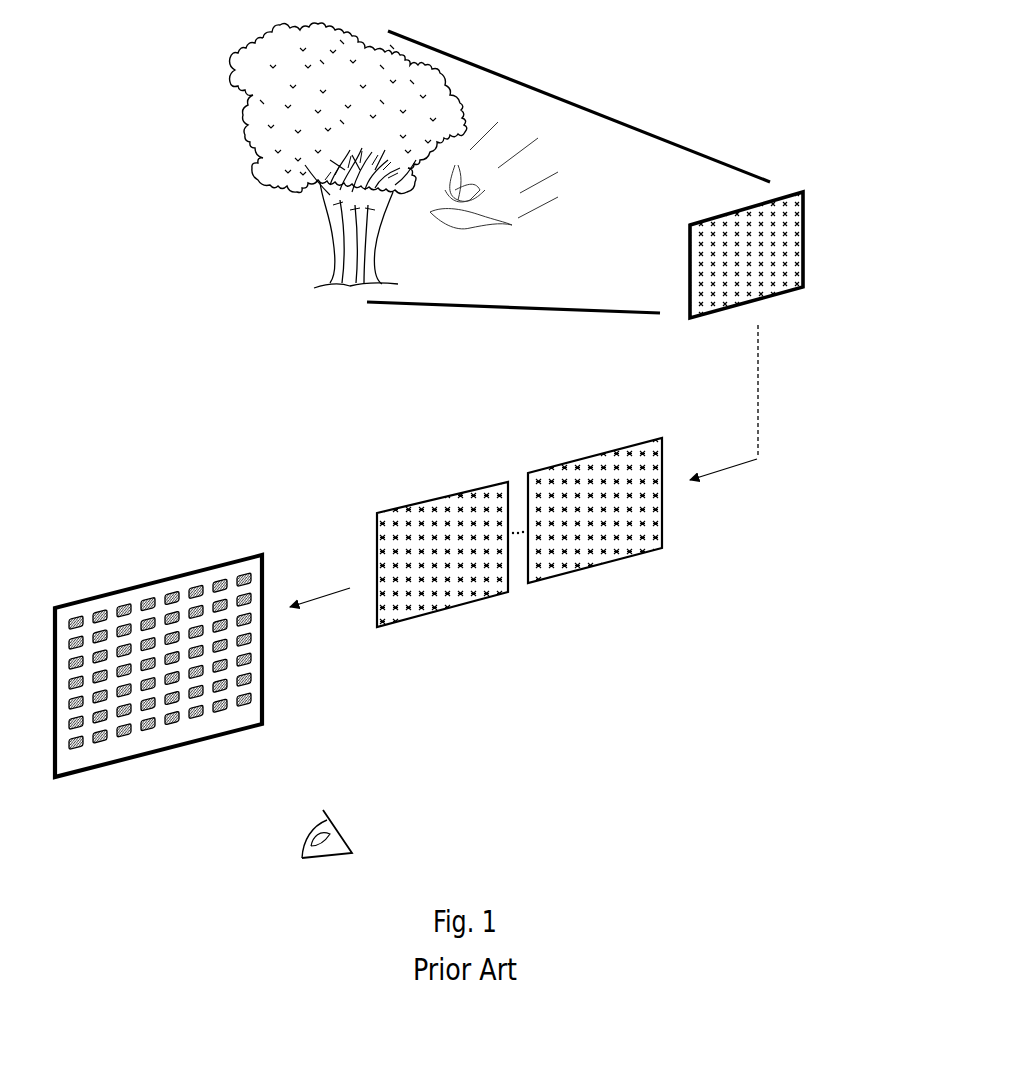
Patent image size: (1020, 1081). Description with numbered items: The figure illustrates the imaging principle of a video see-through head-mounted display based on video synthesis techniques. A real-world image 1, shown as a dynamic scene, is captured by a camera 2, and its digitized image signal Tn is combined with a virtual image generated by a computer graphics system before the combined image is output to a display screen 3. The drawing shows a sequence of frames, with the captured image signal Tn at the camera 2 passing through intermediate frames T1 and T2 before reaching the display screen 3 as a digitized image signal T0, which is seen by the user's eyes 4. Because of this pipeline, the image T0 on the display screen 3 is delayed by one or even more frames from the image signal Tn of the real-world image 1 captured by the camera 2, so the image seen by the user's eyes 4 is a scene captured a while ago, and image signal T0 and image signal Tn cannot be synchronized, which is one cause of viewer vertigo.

The real-world image 1 is at (295, 273).
The camera 2 is at (806, 250).
The display screen 3 is at (147, 740).
The user's eyes 4 is at (340, 823).
The digitized image signal T0 is at (217, 562).
The frame T1 is at (462, 488).
The frame T2 is at (602, 450).
The digitized image signal Tn is at (795, 290).